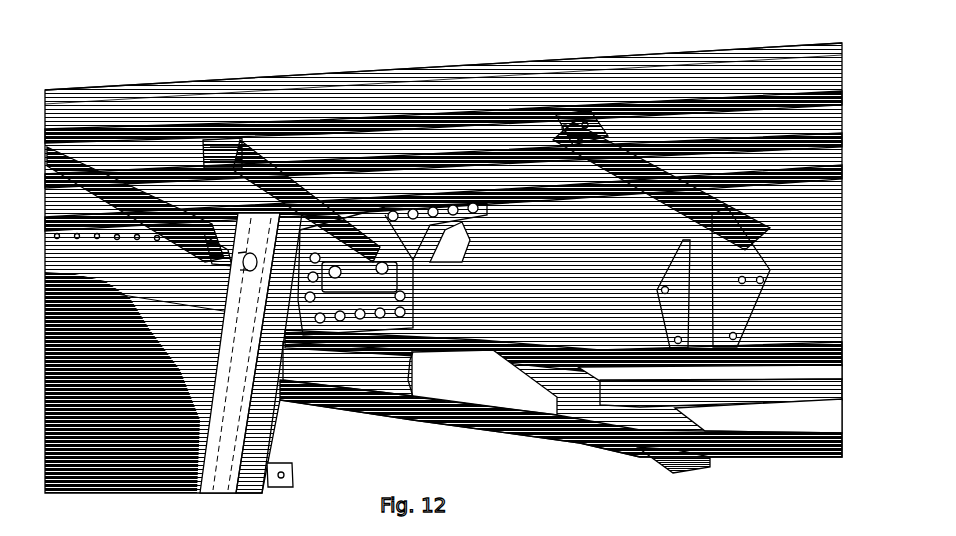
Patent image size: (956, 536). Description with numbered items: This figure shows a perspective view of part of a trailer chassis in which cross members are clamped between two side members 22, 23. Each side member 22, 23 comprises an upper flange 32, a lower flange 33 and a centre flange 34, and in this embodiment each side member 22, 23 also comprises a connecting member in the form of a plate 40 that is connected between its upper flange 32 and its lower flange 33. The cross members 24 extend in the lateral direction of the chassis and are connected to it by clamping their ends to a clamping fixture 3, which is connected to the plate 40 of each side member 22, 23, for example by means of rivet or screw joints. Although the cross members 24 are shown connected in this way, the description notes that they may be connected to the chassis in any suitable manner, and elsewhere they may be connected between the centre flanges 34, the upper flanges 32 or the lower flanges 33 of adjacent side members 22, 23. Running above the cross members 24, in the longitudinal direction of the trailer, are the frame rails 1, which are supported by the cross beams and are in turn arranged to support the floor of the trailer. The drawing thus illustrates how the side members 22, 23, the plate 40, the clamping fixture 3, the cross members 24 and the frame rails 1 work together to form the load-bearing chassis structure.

The frame rails 1 is at (750, 158).
The clamping fixture 3 is at (447, 220).
The side member 22 is at (152, 238).
The side member 23 is at (347, 383).
The cross member 24 is at (287, 168).
The upper flange 32 is at (547, 195).
The lower flange 33 is at (473, 347).
The centre flange 34 is at (610, 407).
The plate 40 is at (793, 313).